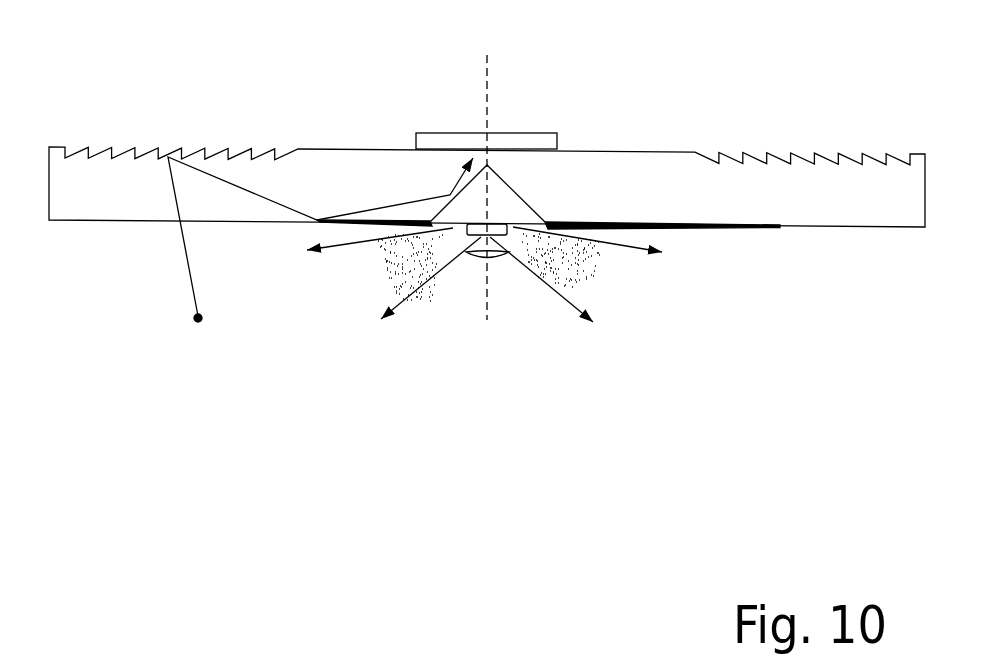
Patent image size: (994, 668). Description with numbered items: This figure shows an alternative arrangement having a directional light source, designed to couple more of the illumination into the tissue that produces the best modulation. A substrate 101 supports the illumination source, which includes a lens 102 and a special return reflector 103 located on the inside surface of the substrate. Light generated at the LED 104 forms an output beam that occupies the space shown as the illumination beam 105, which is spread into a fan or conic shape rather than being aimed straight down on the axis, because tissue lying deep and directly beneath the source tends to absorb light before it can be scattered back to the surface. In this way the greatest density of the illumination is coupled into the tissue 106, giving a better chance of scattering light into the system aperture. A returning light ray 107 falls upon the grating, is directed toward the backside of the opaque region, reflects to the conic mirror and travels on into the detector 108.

The substrate 101 is at (633, 165).
The lens 102 is at (500, 257).
The special return reflector 103 is at (485, 257).
The LED 104 is at (507, 223).
The illumination beam 105 is at (385, 268).
The tissue 106 is at (192, 332).
The light ray 107 is at (378, 203).
The detector 108 is at (452, 137).